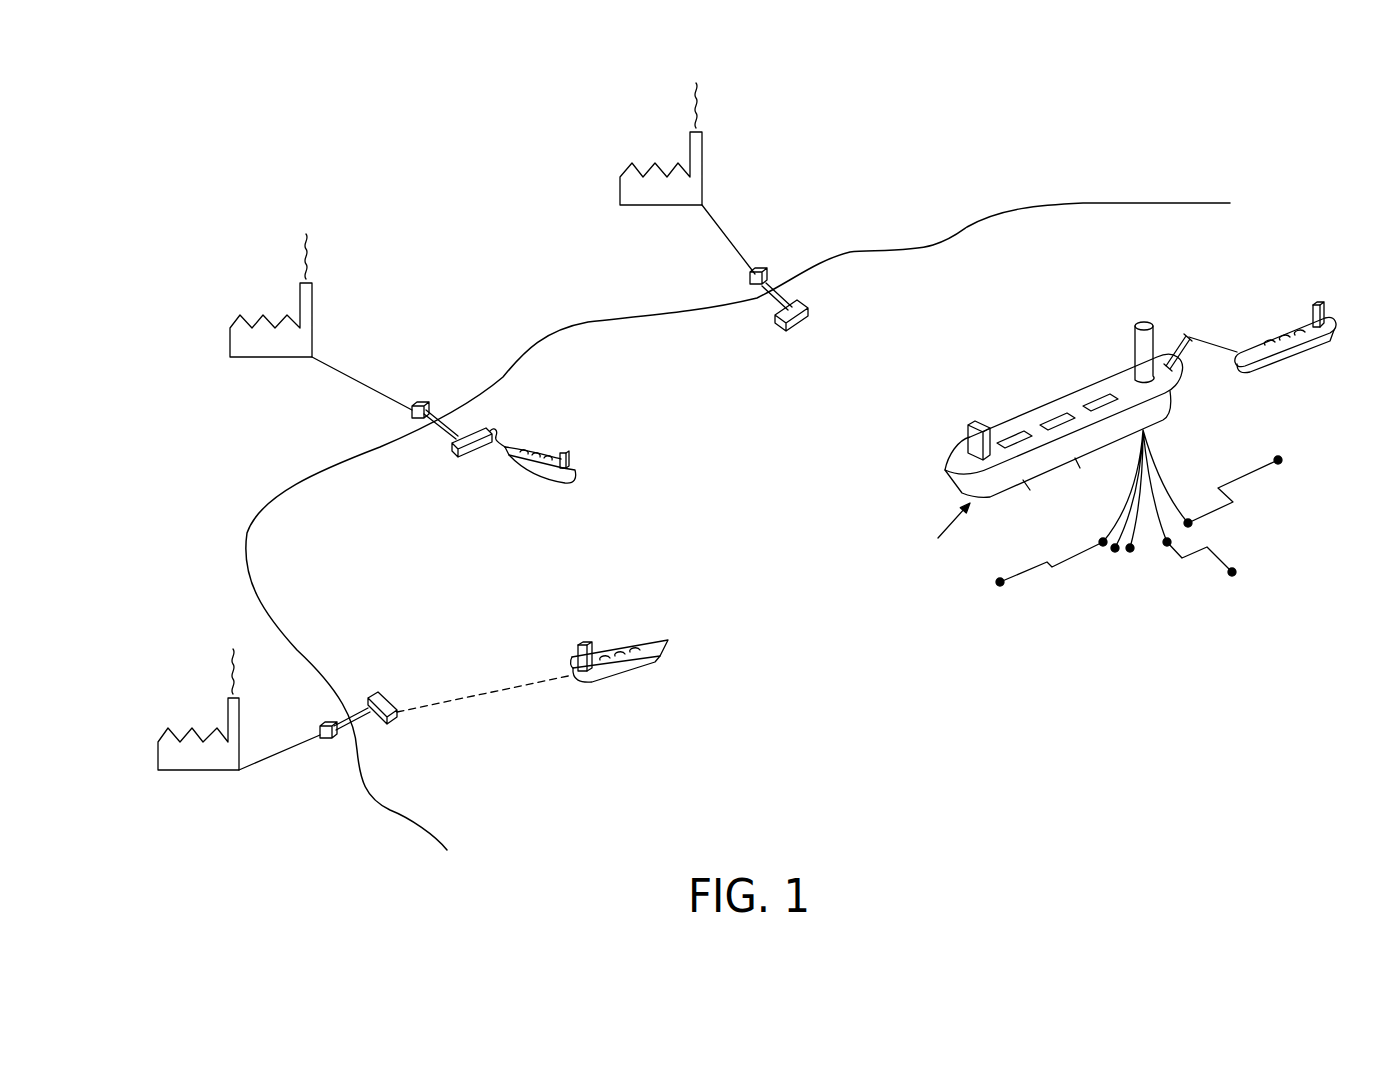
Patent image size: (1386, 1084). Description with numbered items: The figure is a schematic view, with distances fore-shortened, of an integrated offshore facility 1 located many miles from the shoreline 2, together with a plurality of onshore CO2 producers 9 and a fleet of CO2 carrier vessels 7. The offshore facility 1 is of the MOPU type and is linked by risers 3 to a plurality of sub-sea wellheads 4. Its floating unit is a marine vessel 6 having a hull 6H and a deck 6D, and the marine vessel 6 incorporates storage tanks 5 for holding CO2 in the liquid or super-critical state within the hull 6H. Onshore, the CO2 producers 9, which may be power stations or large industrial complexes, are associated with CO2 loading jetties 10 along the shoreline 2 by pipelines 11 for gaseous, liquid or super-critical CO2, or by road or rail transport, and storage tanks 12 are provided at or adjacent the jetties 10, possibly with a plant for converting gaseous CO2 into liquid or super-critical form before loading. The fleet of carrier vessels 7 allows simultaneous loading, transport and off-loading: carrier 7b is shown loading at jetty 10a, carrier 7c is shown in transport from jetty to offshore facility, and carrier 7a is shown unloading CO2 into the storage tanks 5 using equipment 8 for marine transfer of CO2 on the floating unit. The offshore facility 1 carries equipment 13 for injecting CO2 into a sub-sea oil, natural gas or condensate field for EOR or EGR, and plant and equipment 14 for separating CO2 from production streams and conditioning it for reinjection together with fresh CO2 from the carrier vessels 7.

The integrated offshore facility 1 is at (1056, 443).
The shoreline 2 is at (968, 230).
The risers 3 is at (1165, 491).
The sub-sea wellheads 4 is at (1192, 525).
The storage tanks 5 is at (1030, 490).
The marine vessel 6 is at (1039, 420).
The deck 6D is at (1120, 370).
The hull 6H is at (950, 478).
The carrier vessels 7 is at (945, 505).
The carrier vessel unloading 7a is at (1285, 338).
The carrier vessel loading 7b is at (540, 452).
The carrier vessel in transport 7c is at (620, 647).
The equipment for marine transfer of CO2 8 is at (1190, 332).
The onshore CO2 producers 9 is at (622, 168).
The CO2 loading jetties 10 is at (808, 313).
The jetty 10a is at (490, 432).
The pipelines 11 is at (722, 228).
The storage tanks 12 is at (762, 268).
The equipment for injecting CO2 13 is at (1147, 432).
The plant and equipment 14 is at (1080, 468).